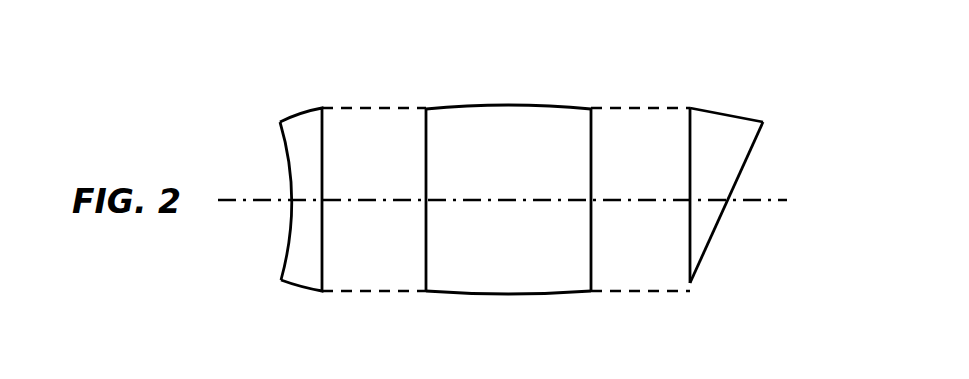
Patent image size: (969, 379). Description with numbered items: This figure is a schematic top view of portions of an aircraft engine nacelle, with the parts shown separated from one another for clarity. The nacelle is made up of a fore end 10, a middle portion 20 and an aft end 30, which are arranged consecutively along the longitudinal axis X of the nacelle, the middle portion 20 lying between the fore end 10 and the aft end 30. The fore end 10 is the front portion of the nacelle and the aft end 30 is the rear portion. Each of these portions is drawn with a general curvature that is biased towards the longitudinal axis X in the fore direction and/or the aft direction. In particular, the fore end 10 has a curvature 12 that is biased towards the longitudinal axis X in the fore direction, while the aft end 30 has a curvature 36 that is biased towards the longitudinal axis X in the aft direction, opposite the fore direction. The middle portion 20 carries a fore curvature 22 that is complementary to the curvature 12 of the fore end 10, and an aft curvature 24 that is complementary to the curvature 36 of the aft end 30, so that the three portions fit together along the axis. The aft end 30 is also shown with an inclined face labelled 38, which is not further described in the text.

The fore end 10 is at (264, 183).
The curvature 12 is at (272, 305).
The middle portion 20 is at (523, 191).
The fore curvature 22 is at (478, 335).
The aft curvature 24 is at (585, 318).
The aft end 30 is at (775, 172).
The curvature 36 is at (746, 93).
The inclined reflective surface of prism 38 is at (757, 140).
The longitudinal axis X is at (772, 199).